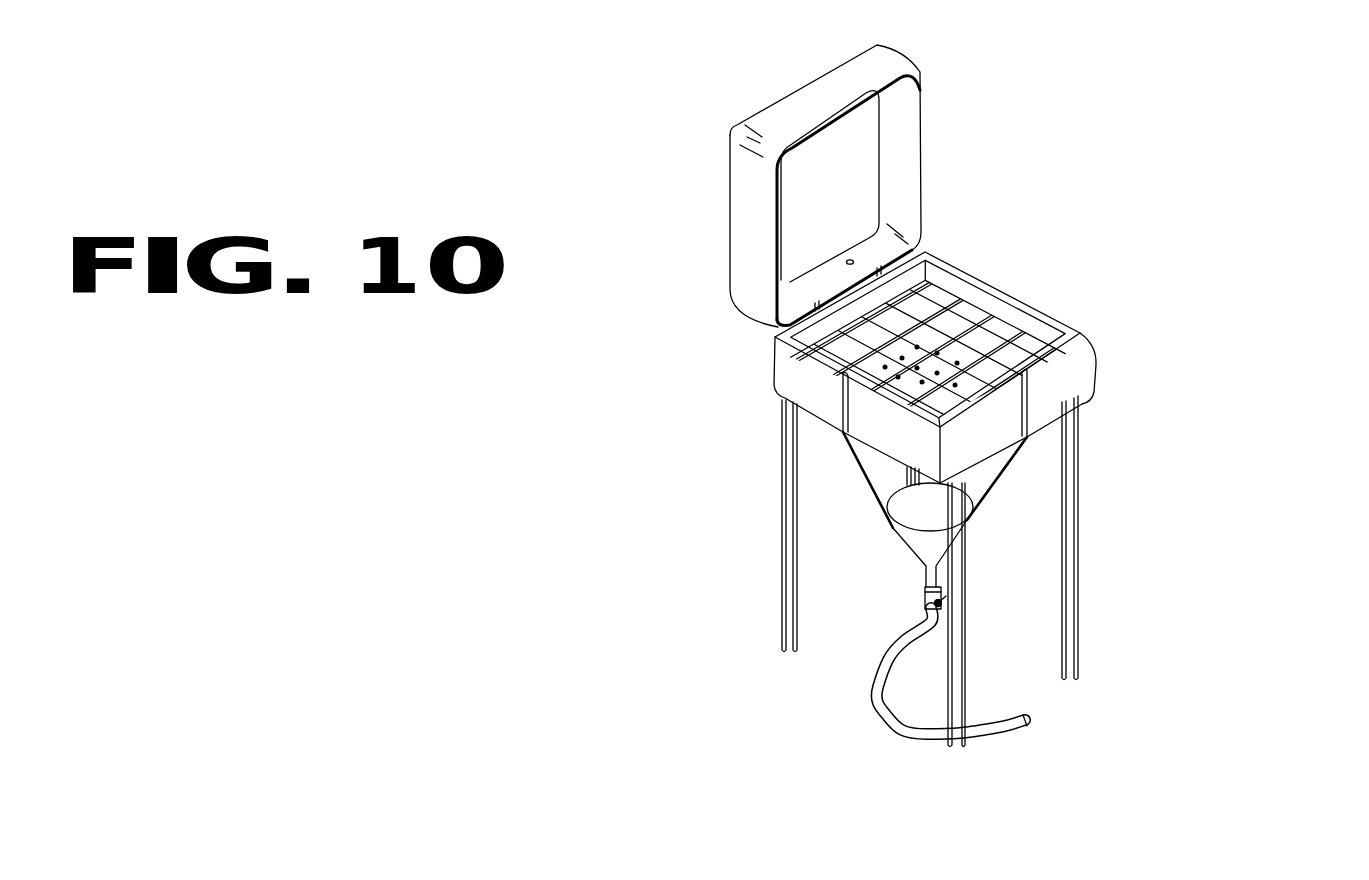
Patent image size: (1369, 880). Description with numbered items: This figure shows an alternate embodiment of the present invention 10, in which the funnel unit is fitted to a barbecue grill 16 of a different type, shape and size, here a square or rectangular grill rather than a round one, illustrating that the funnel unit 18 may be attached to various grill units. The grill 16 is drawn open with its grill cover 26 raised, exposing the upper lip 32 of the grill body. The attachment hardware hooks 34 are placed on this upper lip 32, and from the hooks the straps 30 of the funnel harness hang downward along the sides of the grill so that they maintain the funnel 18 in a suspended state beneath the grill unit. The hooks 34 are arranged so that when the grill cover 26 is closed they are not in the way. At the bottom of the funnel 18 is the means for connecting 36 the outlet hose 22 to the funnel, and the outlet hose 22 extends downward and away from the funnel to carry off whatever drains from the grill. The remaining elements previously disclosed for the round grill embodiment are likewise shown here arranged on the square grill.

The present invention 10 is at (775, 753).
The barbecue grill 16 is at (967, 268).
The funnel 18 is at (935, 538).
The outlet hose 22 is at (883, 672).
The grill cover 26 is at (927, 93).
The funnel harness straps 30 is at (1027, 413).
The upper lip 32 is at (940, 263).
The attachment hardware hooks 34 is at (987, 298).
The means for connecting 36 is at (950, 603).